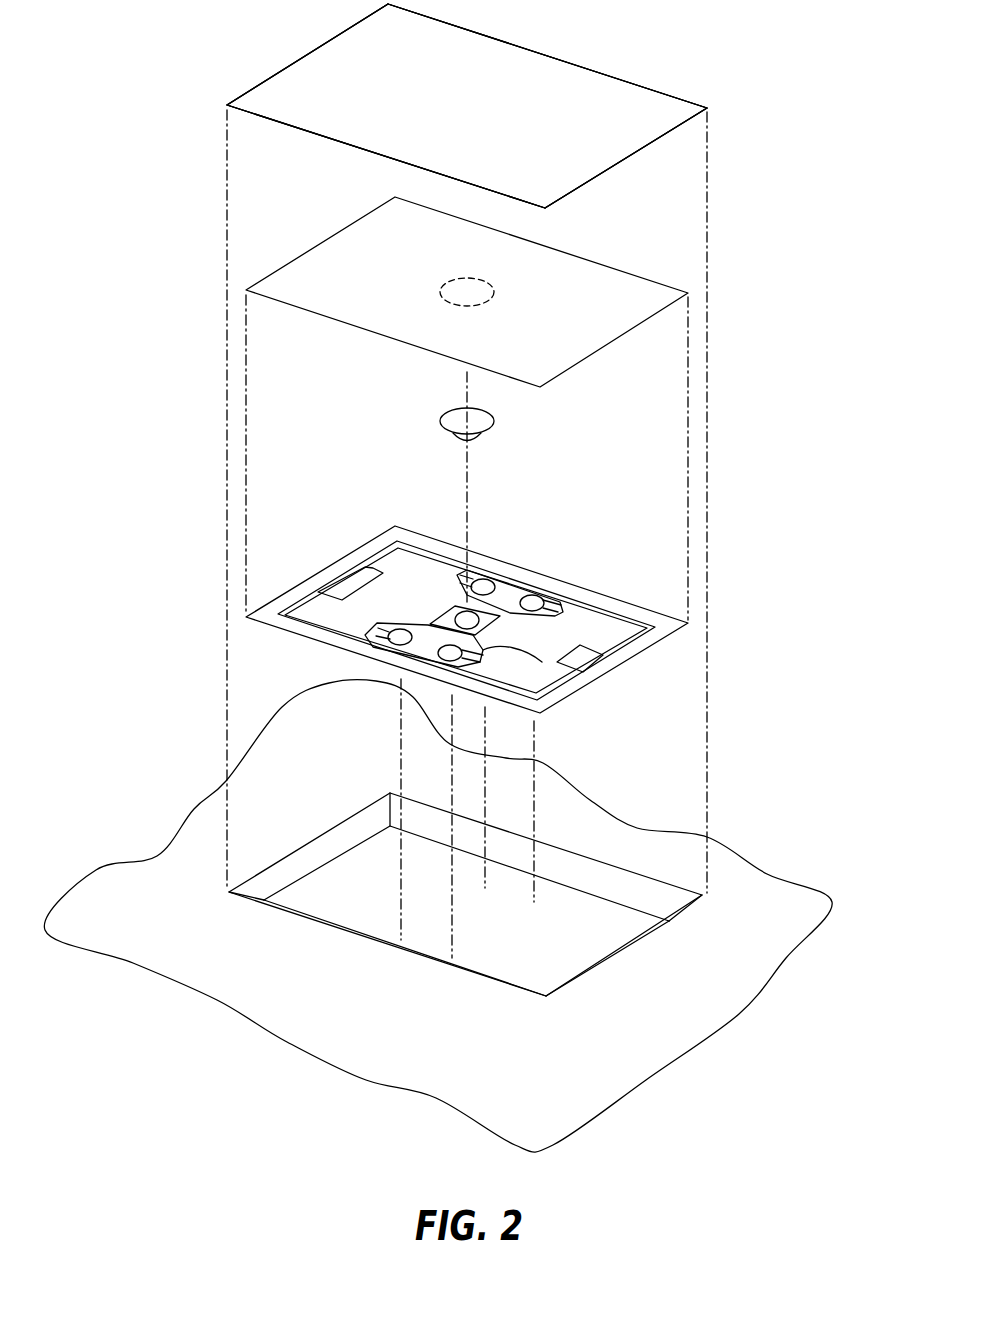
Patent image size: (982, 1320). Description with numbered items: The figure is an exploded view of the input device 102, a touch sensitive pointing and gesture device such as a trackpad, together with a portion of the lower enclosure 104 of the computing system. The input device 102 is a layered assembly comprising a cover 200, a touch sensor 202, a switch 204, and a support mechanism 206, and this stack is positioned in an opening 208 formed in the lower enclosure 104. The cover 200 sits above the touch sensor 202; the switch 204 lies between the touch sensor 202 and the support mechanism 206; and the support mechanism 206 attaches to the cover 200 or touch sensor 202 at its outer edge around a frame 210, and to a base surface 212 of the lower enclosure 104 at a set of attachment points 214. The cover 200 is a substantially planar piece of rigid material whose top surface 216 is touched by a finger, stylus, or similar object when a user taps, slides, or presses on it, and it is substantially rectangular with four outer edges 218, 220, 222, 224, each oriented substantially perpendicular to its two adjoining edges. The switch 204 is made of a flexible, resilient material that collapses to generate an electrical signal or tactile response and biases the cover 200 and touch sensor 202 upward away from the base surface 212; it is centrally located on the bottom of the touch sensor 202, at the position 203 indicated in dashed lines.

The input device 102 is at (180, 240).
The lower enclosure 104 is at (644, 842).
The cover 200 is at (593, 88).
The touch sensor 202 is at (603, 282).
The position 203 is at (453, 283).
The switch 204 is at (493, 420).
The support mechanism 206 is at (628, 595).
The opening 208 is at (338, 840).
The frame 210 is at (523, 575).
The base surface 212 is at (511, 963).
The attachment points 214 is at (493, 583).
The top surface 216 is at (438, 50).
The outer edge 218 is at (552, 53).
The outer edge 220 is at (627, 160).
The outer edge 222 is at (347, 143).
The outer edge 224 is at (307, 53).